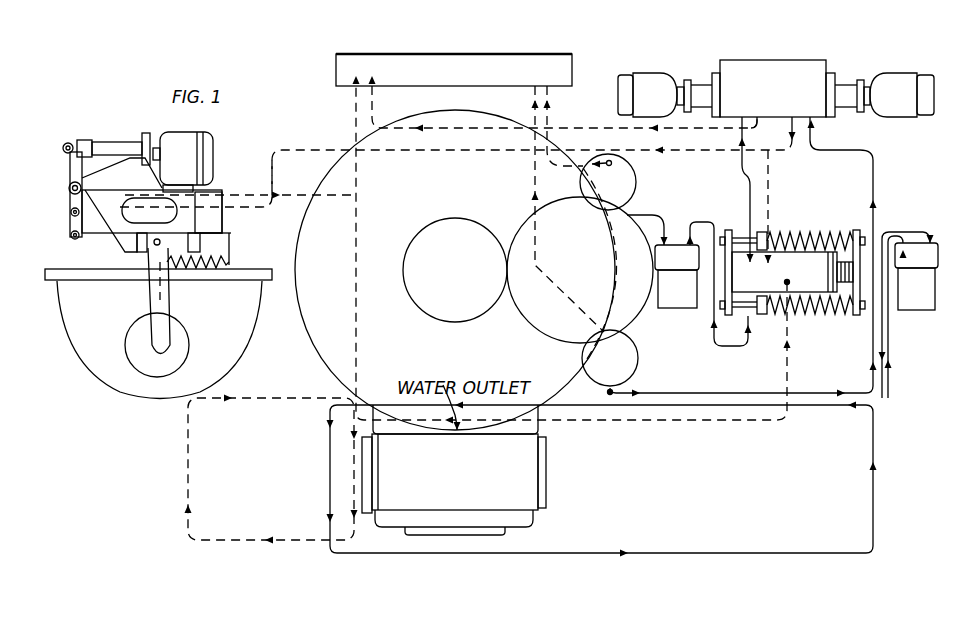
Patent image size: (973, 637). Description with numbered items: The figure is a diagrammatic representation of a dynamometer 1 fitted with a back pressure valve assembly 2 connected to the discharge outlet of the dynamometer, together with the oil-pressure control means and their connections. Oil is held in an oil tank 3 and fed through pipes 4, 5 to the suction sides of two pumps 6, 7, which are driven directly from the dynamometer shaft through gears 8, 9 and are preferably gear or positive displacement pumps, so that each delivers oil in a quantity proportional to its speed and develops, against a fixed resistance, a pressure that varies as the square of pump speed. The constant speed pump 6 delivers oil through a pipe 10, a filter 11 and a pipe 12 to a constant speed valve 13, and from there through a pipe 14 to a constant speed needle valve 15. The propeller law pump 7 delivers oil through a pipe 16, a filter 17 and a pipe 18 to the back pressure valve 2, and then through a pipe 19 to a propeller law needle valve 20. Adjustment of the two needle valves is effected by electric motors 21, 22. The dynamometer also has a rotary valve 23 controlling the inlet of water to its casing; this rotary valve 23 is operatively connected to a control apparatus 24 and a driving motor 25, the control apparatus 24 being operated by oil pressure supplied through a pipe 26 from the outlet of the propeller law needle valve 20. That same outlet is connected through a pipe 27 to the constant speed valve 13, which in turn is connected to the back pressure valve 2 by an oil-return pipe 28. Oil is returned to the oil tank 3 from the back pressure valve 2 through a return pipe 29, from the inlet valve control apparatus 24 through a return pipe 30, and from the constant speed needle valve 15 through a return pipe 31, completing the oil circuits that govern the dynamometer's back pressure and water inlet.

The dynamometer 1 is at (312, 343).
The back pressure valve assembly 2 is at (530, 470).
The oil tank 3 is at (524, 58).
The pipe 4 is at (549, 115).
The pipe 5 is at (533, 109).
The constant speed pump 6 is at (636, 176).
The propeller law pump 7 is at (639, 362).
The gear 8 is at (440, 221).
The gear 9 is at (532, 218).
The pipe 10 is at (660, 223).
The filter 11 is at (670, 306).
The pipe 12 is at (731, 346).
The constant speed valve 13 is at (815, 253).
The pipe 14 is at (745, 188).
The constant speed needle valve 15 is at (739, 65).
The pipe 16 is at (757, 393).
The filter 17 is at (918, 303).
The pipe 18 is at (800, 408).
The pipe 19 is at (805, 554).
The propeller law needle valve 20 is at (813, 67).
The electric motor 21 is at (648, 74).
The electric motor 22 is at (890, 71).
The rotary valve 23 is at (172, 334).
The control apparatus 24 is at (220, 214).
The driving motor 25 is at (185, 139).
The pipe 26 is at (328, 149).
The pipe 27 is at (768, 188).
The oil-return pipe 28 is at (727, 421).
The return pipe 29 is at (186, 520).
The return pipe 30 is at (300, 195).
The return pipe 31 is at (610, 127).